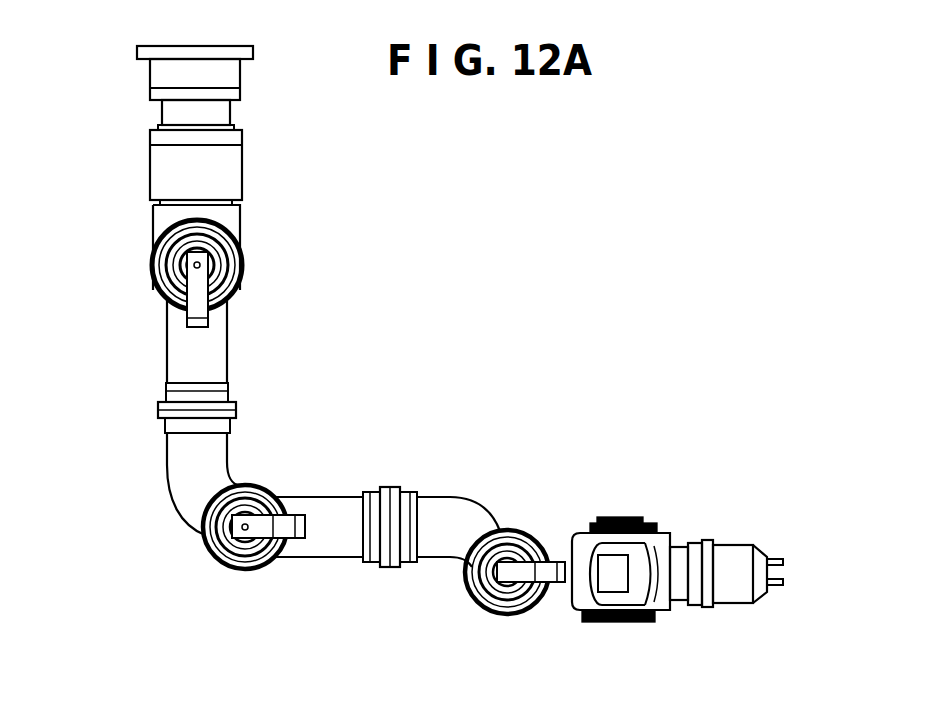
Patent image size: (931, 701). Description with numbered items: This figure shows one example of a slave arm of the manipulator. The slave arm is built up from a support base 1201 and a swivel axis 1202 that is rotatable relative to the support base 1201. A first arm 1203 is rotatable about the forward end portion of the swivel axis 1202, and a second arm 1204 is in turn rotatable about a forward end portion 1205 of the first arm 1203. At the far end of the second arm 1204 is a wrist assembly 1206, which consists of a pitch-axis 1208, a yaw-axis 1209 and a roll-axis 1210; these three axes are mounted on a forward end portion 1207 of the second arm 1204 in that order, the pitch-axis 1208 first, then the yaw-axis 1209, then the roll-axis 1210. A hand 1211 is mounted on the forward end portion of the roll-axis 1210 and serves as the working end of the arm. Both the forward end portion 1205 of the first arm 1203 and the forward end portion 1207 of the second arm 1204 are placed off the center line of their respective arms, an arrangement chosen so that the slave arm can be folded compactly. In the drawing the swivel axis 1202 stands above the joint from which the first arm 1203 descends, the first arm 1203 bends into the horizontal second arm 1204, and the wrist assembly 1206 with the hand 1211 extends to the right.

The support base 1201 is at (160, 72).
The swivel axis 1202 is at (172, 177).
The first arm 1203 is at (175, 358).
The second arm 1204 is at (343, 512).
The forward end portion of the first arm 1205 is at (232, 530).
The wrist assembly 1206 is at (563, 595).
The forward end portion of the second arm 1207 is at (512, 557).
The pitch-axis 1208 is at (478, 602).
The yaw-axis 1209 is at (622, 518).
The roll-axis 1210 is at (693, 603).
The hand 1211 is at (740, 545).